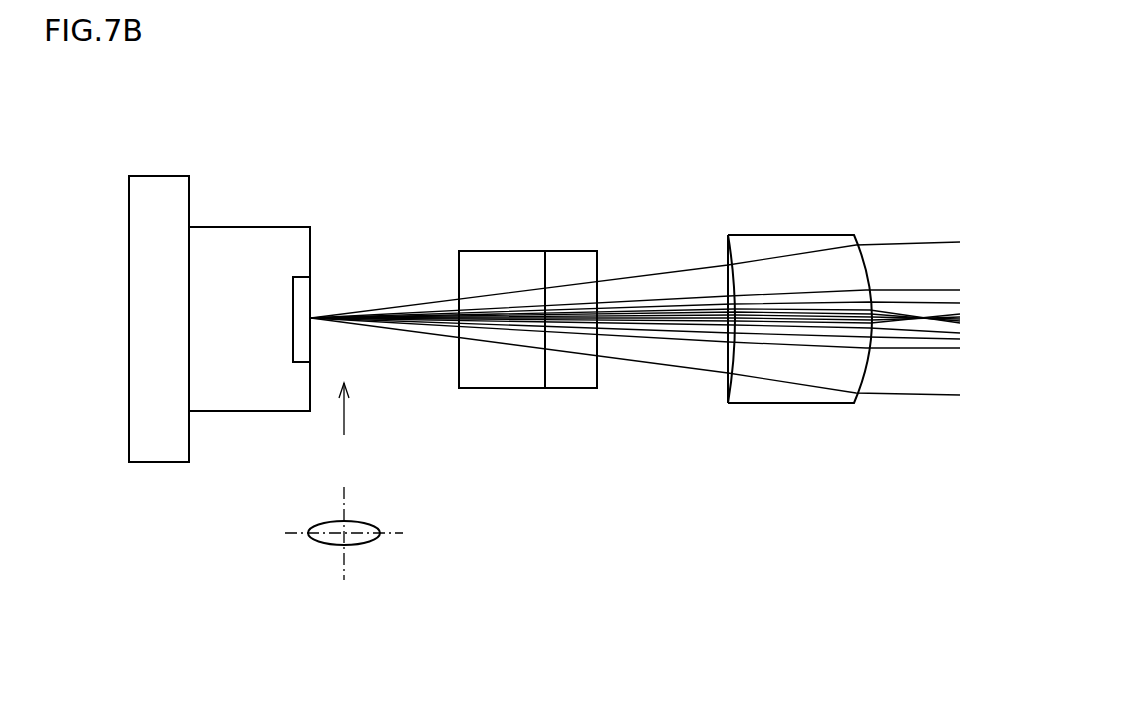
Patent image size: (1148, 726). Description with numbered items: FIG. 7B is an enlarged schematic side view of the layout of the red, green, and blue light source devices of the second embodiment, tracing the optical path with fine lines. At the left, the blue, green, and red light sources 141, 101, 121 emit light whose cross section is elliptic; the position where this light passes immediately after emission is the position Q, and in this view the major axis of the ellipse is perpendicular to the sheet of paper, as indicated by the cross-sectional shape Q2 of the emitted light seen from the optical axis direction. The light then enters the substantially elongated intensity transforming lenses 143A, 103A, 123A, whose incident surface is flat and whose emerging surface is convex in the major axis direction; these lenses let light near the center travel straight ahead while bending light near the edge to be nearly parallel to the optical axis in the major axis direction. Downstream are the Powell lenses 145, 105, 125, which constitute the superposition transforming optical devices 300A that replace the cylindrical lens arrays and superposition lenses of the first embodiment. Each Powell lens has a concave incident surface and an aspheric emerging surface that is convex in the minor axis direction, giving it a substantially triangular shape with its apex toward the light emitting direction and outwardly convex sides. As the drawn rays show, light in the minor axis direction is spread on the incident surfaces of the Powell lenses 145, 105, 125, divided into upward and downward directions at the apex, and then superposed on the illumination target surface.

The blue light source 141 is at (188, 277).
The green light source 101 is at (188, 277).
The red light source 121 is at (159, 198).
The intensity transforming lens 143A is at (479, 240).
The intensity transforming lens 103A is at (479, 240).
The intensity transforming lens 123A is at (498, 273).
The Powell lens 145 is at (811, 240).
The Powell lens 105 is at (811, 240).
The Powell lens 125 is at (811, 240).
The superposition transforming optical device 300A is at (788, 260).
The position Q is at (344, 426).
The cross-sectional shape Q2 is at (360, 548).